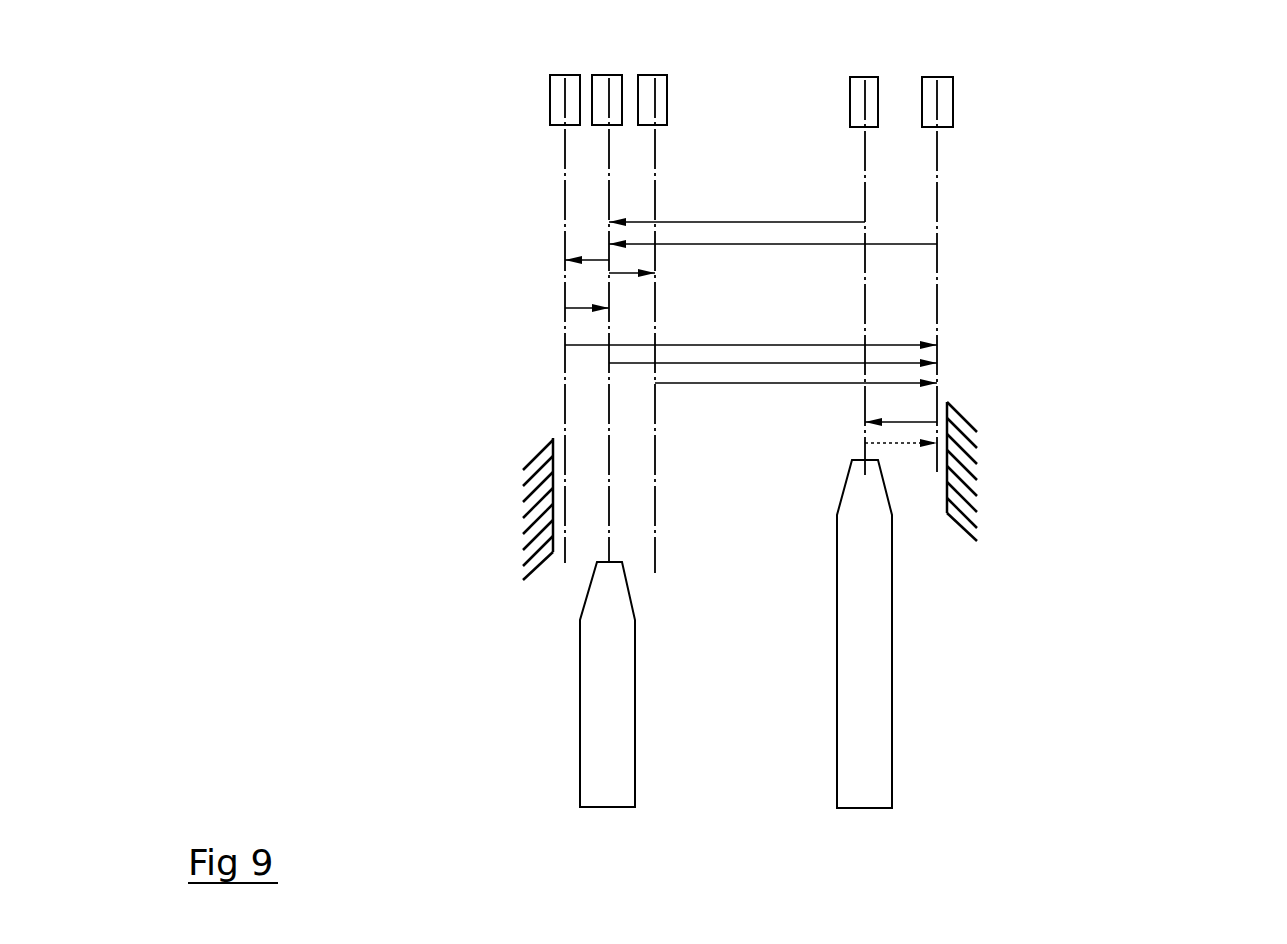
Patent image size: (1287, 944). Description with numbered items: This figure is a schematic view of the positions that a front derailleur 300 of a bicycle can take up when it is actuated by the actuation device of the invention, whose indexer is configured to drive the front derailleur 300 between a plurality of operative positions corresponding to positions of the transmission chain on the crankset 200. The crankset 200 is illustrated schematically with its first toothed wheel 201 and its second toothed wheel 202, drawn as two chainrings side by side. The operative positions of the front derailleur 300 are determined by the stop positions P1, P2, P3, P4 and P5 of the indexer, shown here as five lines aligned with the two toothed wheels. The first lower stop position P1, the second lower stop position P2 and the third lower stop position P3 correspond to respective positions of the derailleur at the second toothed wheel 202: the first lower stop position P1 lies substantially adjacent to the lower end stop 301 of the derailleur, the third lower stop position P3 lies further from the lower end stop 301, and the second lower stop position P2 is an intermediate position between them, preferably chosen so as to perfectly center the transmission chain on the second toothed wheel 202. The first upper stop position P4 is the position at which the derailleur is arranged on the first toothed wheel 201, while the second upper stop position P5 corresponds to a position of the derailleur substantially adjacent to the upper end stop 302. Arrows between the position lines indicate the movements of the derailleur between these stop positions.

The front derailleur 300 is at (530, 91).
The first lower stop position P1 is at (557, 150).
The second lower stop position P2 is at (610, 132).
The third lower stop position P3 is at (655, 145).
The first upper stop position P4 is at (864, 155).
The second upper stop position P5 is at (937, 150).
The lower end stop 301 is at (530, 490).
The upper end stop 302 is at (975, 440).
The crankset 200 is at (760, 667).
The first toothed wheel 201 is at (867, 693).
The second toothed wheel 202 is at (597, 650).